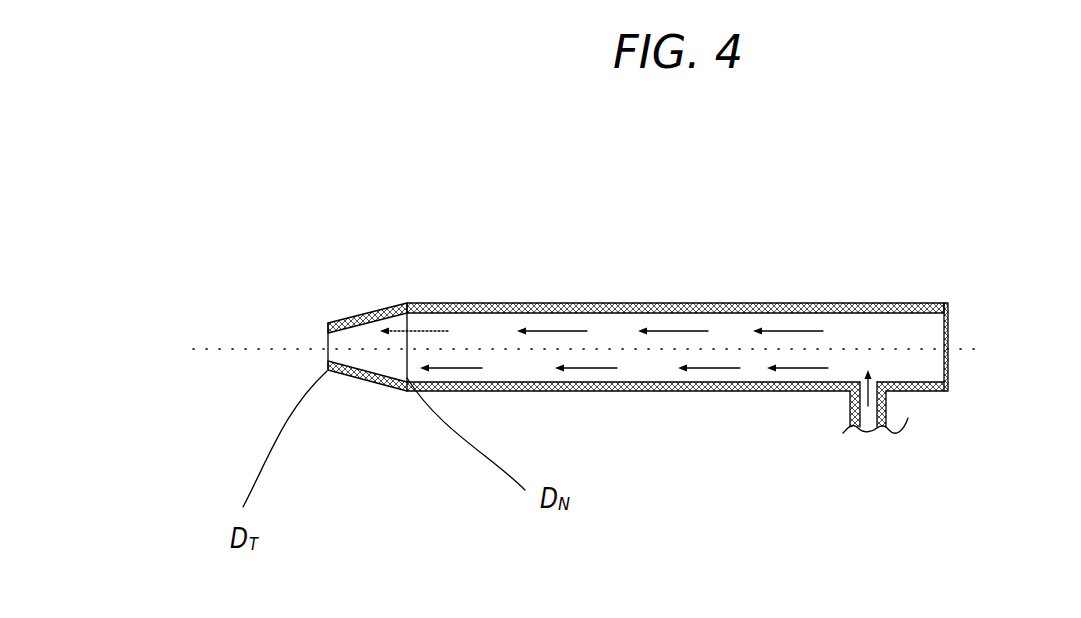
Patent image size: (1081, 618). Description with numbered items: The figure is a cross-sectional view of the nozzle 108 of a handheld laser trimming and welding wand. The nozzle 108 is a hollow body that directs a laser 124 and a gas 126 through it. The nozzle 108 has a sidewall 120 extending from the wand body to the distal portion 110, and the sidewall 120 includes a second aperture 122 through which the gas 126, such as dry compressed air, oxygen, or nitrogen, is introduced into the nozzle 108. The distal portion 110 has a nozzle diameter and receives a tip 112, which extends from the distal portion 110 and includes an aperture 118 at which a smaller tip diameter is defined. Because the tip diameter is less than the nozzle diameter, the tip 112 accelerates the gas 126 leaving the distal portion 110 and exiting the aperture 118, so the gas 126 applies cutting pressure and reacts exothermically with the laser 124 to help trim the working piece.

The nozzle 108 is at (898, 234).
The distal portion 110 is at (411, 343).
The tip 112 is at (375, 363).
The aperture 118 is at (328, 323).
The sidewall 120 is at (653, 383).
The second aperture 122 is at (877, 380).
The laser 124 is at (512, 348).
The gas 126 is at (683, 330).